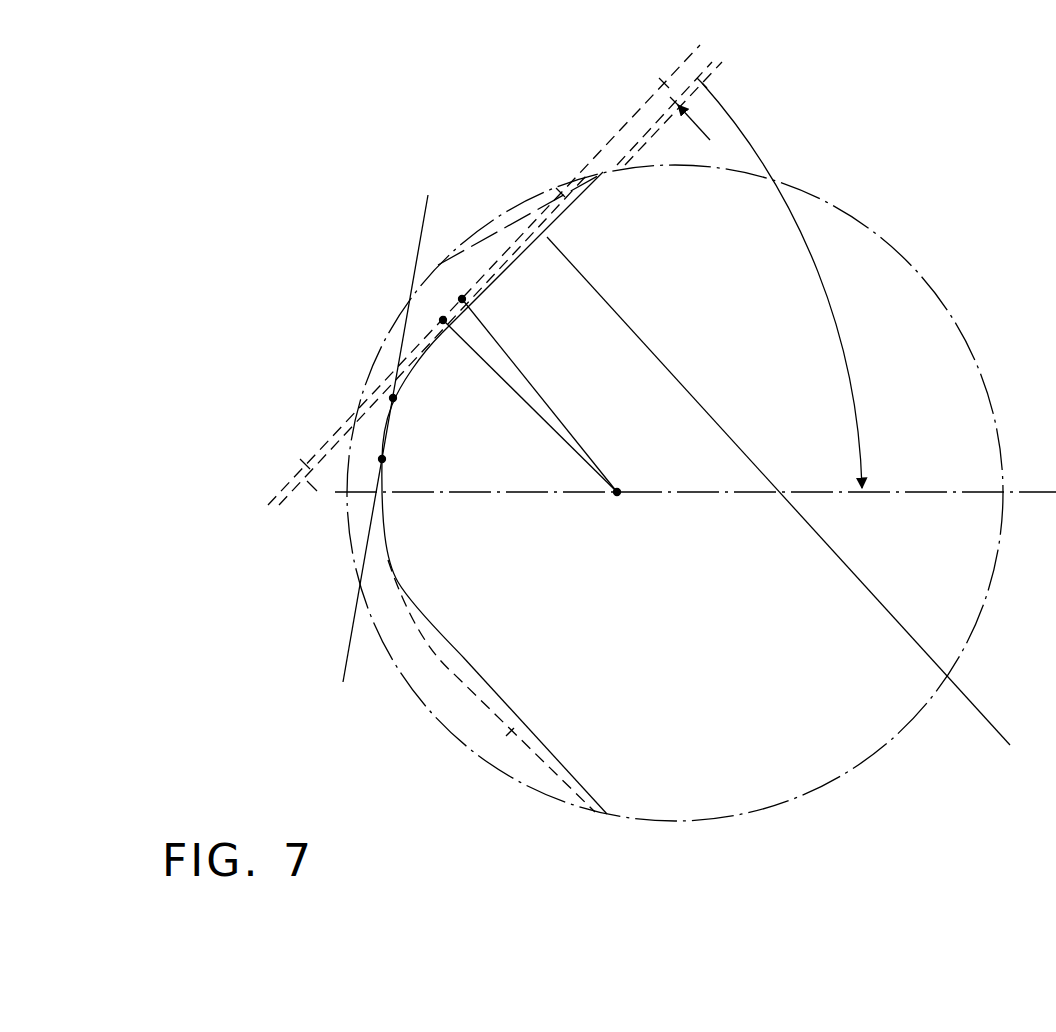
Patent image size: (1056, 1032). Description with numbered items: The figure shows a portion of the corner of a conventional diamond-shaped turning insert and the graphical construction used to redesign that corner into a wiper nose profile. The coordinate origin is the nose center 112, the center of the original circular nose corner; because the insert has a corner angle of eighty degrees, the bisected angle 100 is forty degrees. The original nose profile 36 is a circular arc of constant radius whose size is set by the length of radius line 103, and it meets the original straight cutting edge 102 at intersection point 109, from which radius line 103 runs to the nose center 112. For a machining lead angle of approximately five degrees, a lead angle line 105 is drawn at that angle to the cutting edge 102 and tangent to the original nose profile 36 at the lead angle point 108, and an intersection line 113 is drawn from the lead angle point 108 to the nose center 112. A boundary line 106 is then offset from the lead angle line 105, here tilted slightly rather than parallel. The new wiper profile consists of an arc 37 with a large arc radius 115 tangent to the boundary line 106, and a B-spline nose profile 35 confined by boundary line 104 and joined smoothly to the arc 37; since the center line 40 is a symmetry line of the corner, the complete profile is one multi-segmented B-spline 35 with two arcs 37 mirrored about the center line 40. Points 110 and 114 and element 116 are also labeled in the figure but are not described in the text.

The B-spline nose profile 35 is at (393, 412).
The original nose profile 36 is at (420, 348).
The arc 37 is at (517, 262).
The center line 40 is at (534, 503).
The bisected angle 100 is at (823, 284).
The original straight cutting edge 102 is at (558, 188).
The radius line 103 is at (536, 392).
The boundary line 104 is at (420, 245).
The lead angle line 105 is at (304, 463).
The boundary line 106 is at (312, 487).
The lead angle point 108 is at (443, 320).
The intersection point 109 is at (462, 299).
The tangent point 110 is at (385, 460).
The nose center 112 is at (619, 496).
The intersection line 113 is at (541, 421).
The tangent point 114 is at (393, 398).
The arc radius 115 is at (842, 556).
The offset distance 116 is at (660, 80).